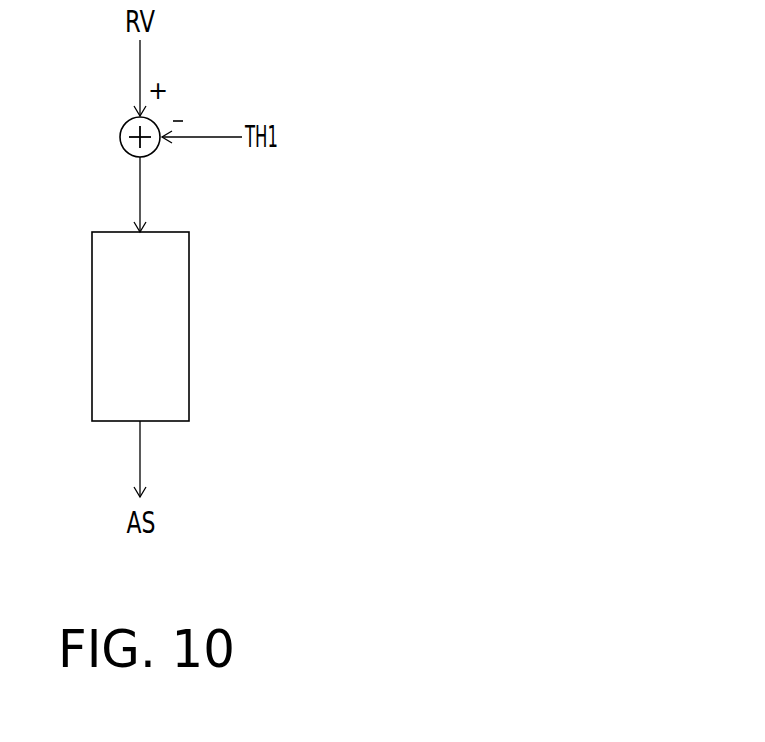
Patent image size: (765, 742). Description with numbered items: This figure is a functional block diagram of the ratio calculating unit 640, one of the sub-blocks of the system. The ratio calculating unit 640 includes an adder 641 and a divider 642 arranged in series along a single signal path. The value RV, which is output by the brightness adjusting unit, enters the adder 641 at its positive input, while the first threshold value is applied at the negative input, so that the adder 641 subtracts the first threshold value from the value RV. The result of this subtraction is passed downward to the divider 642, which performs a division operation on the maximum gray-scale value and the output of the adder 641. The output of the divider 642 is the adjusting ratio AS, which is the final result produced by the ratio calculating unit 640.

The ratio calculating unit 640 is at (427, 530).
The adder 641 is at (123, 126).
The divider 642 is at (189, 345).